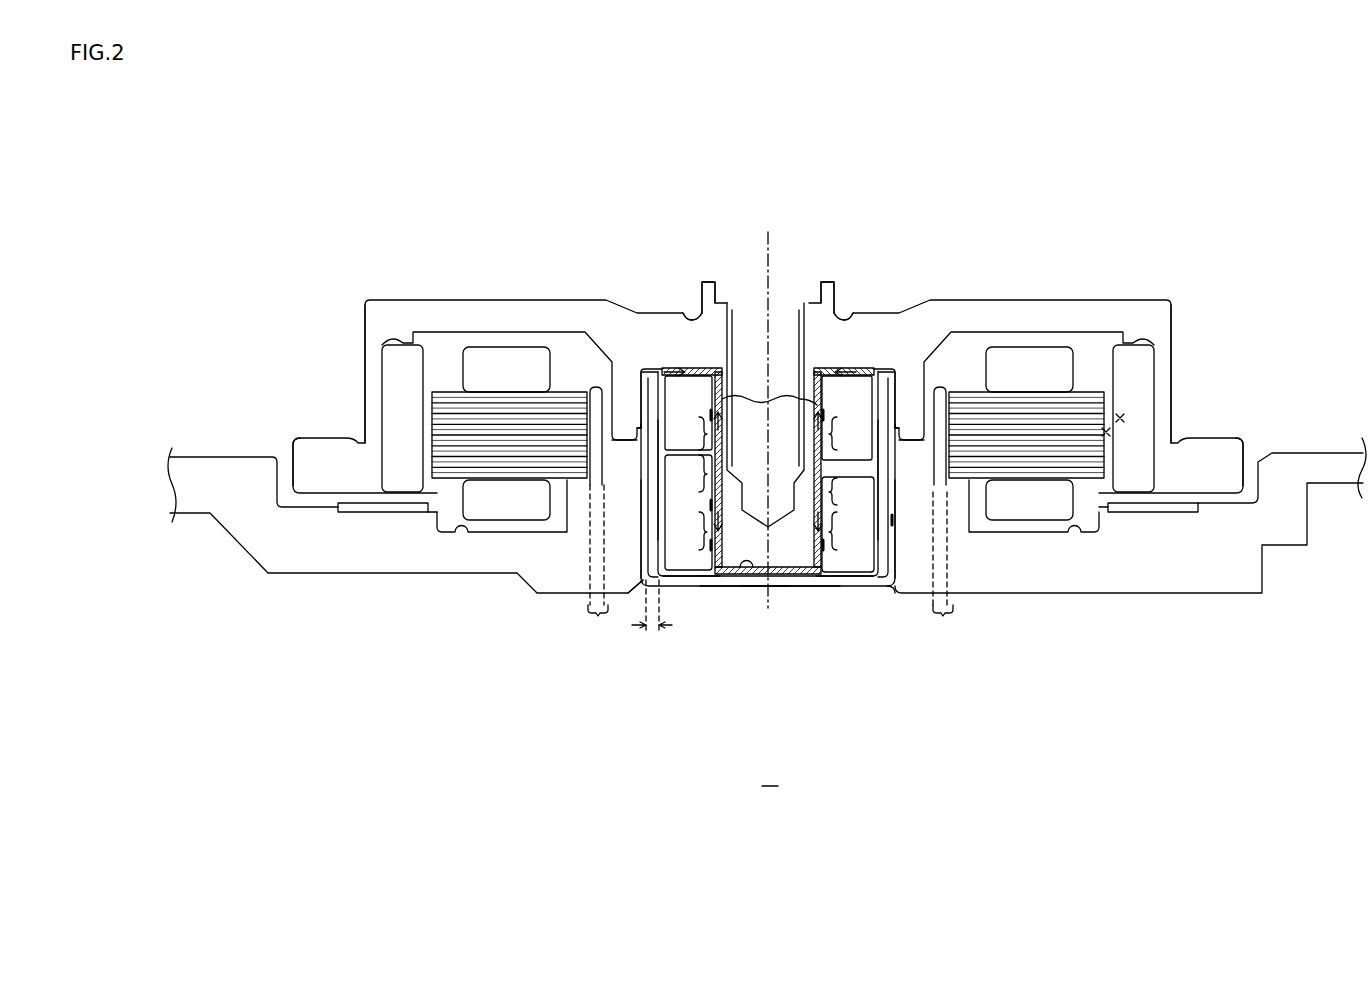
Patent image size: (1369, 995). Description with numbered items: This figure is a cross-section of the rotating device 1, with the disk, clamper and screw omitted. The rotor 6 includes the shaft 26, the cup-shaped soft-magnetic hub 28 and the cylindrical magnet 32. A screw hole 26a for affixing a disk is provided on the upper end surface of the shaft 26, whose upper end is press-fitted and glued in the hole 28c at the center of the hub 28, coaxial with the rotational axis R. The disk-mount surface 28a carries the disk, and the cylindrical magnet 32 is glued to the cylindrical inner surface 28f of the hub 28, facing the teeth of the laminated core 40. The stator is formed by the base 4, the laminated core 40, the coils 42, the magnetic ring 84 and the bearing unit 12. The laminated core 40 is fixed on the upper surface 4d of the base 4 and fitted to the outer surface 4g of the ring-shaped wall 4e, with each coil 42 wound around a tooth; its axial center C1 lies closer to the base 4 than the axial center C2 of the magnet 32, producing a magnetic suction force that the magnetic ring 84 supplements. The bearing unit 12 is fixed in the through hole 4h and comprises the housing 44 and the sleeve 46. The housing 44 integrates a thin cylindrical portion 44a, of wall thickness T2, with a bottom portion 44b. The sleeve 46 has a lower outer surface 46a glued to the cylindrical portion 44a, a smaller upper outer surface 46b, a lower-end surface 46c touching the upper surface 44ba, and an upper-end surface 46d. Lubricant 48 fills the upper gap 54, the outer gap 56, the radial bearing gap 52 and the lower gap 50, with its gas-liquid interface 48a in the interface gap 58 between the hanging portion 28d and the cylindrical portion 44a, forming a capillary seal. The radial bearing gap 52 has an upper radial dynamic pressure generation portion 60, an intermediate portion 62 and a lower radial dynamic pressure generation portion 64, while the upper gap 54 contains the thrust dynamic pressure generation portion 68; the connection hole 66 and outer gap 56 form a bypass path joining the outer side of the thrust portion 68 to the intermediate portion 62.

The rotating device 1 is at (770, 775).
The base 4 is at (767, 500).
The upper surface of the base 4d is at (455, 532).
The ring-shaped wall 4e is at (769, 561).
The outer surface of the ring-shaped wall 4g is at (565, 532).
The through hole 4h is at (898, 590).
The rotor 6 is at (733, 237).
The bearing unit 12 is at (725, 710).
The shaft 26 is at (777, 368).
The screw hole 26a is at (792, 350).
The hub 28 is at (786, 351).
The disk-mount surface 28a is at (330, 438).
The hole 28c is at (780, 345).
The hanging portion 28d is at (622, 408).
The cylindrical inner surface 28f is at (385, 380).
The cylindrical magnet 32 is at (408, 373).
The laminated core 40 is at (445, 480).
The coils 42 is at (523, 500).
The housing 44 is at (759, 543).
The cylindrical portion 44a is at (647, 560).
The bottom portion 44b is at (848, 587).
The upper surface of the bottom portion 44ba is at (756, 586).
The sleeve 46 is at (758, 475).
The lower outer surface 46a is at (658, 556).
The upper outer surface 46b is at (659, 500).
The lower-end surface 46c is at (703, 578).
The upper-end surface 46d is at (662, 371).
The lubricant 48 is at (767, 525).
The gas-liquid interface 48a is at (646, 430).
The lower gap 50 is at (765, 570).
The radial bearing gap 52 is at (772, 398).
The upper gap 54 is at (670, 380).
The outer gap 56 is at (662, 430).
The interface gap 58 is at (637, 422).
The upper radial dynamic pressure generation portion 60 is at (770, 433).
The intermediate portion 62 is at (770, 480).
The lower radial dynamic pressure generation portion 64 is at (770, 531).
The connection hole 66 is at (893, 520).
The thrust dynamic pressure generation portion 68 is at (668, 363).
The magnetic ring 84 is at (390, 508).
The axial center of the laminated core C1 is at (1112, 432).
The axial center of the inner surface of the cylindrical magnet C2 is at (1125, 418).
The rotational axis R is at (766, 408).
The wall thickness of the cylindrical portion T2 is at (652, 615).